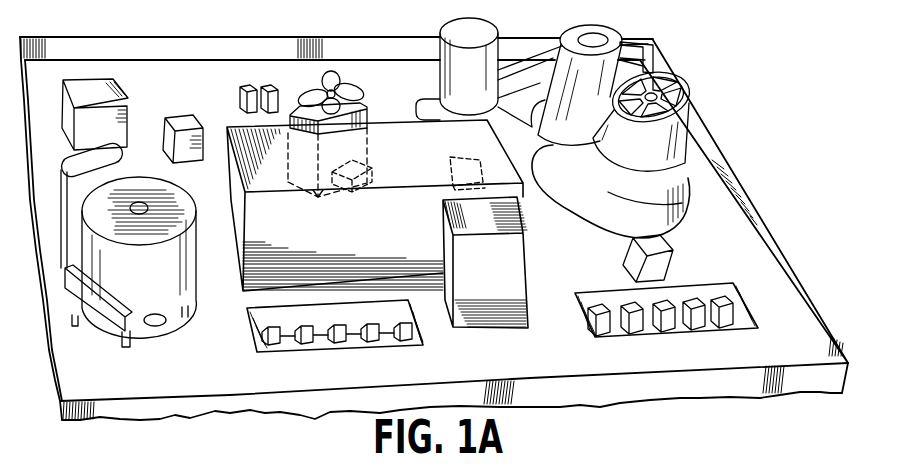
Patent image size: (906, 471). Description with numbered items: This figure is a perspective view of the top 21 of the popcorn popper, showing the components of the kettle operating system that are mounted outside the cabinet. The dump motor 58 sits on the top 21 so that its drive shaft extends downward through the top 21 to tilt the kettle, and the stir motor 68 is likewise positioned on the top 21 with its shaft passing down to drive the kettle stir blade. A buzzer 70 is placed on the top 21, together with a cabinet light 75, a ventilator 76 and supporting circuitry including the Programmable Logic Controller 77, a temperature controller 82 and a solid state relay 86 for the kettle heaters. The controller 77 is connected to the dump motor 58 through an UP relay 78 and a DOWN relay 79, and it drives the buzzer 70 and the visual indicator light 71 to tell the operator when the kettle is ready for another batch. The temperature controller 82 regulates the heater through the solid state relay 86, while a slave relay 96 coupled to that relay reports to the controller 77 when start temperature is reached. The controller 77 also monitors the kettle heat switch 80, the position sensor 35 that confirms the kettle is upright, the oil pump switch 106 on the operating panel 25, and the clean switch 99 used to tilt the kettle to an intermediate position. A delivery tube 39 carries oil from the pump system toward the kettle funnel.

The top 21 is at (255, 67).
The operating panel 25 is at (587, 325).
The position sensor 35 is at (372, 177).
The delivery tube 39 is at (653, 45).
The dump motor 58 is at (163, 302).
The stir motor 68 is at (367, 104).
The buzzer 70 is at (190, 118).
The visual indicator light 71 is at (733, 328).
The cabinet light 75 is at (570, 33).
The ventilator 76 is at (687, 172).
The Programmable Logic Controller 77 is at (375, 205).
The UP relay 78 is at (247, 87).
The DOWN relay 79 is at (270, 87).
The kettle heat switch 80 is at (703, 333).
The temperature controller 82 is at (517, 270).
The solid state relay 86 is at (113, 86).
The slave relay 96 is at (460, 157).
The clean switch 99 is at (273, 353).
The oil pump switch 106 is at (303, 352).